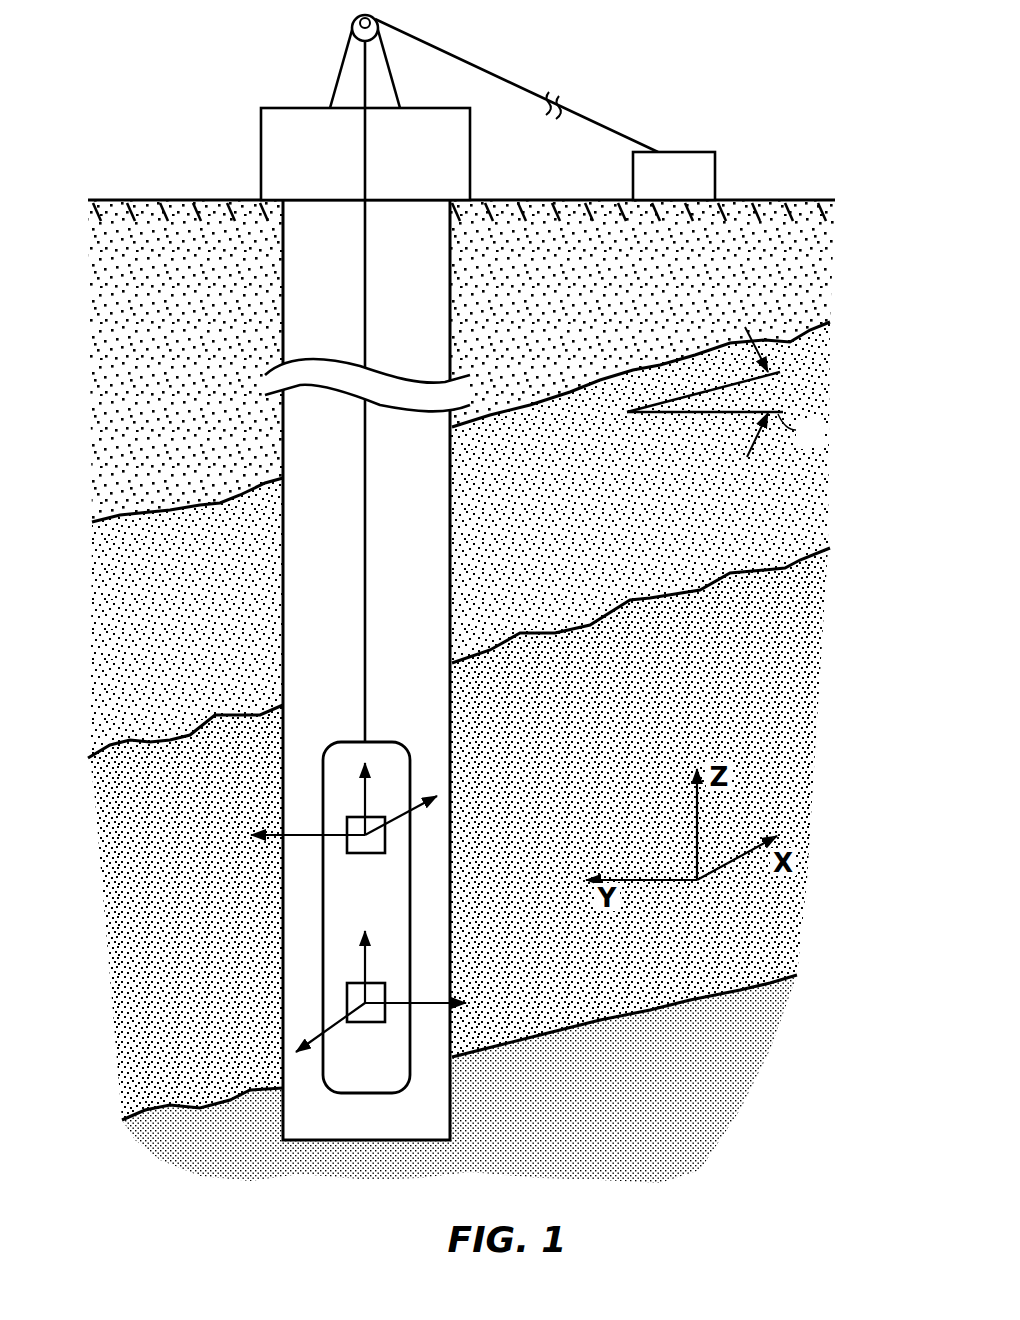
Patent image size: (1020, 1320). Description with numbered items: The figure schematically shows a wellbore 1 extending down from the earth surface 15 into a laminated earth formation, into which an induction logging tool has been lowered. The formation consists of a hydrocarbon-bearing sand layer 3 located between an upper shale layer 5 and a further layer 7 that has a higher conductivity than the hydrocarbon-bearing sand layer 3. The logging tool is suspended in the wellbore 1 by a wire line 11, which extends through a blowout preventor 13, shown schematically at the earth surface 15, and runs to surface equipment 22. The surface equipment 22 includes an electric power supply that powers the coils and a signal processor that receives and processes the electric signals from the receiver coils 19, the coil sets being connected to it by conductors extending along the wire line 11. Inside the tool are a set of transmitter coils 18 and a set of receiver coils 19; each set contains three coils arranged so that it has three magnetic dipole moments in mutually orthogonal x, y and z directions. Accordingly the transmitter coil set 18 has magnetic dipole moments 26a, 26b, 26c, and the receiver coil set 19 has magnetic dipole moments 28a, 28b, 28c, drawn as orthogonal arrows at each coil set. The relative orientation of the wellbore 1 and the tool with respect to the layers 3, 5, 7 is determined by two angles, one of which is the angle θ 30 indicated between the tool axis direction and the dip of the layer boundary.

The wellbore 1 is at (308, 551).
The hydrocarbon-bearing sand layer 3 is at (164, 921).
The upper shale layer 5 is at (164, 551).
The layer 7 is at (178, 1163).
The wire line 11 is at (478, 62).
The blowout preventor 13 is at (272, 148).
The earth surface 15 is at (192, 200).
The set of transmitter coils 18 is at (347, 823).
The set of receiver coils 19 is at (323, 920).
The surface equipment 22 is at (716, 170).
The magnetic dipole moment 26a is at (432, 805).
The magnetic dipole moment 26b is at (275, 832).
The magnetic dipole moment 26c is at (367, 790).
The magnetic dipole moment 28a is at (315, 1040).
The magnetic dipole moment 28b is at (432, 1002).
The magnetic dipole moment 28c is at (367, 965).
The angle θ 30 is at (775, 397).